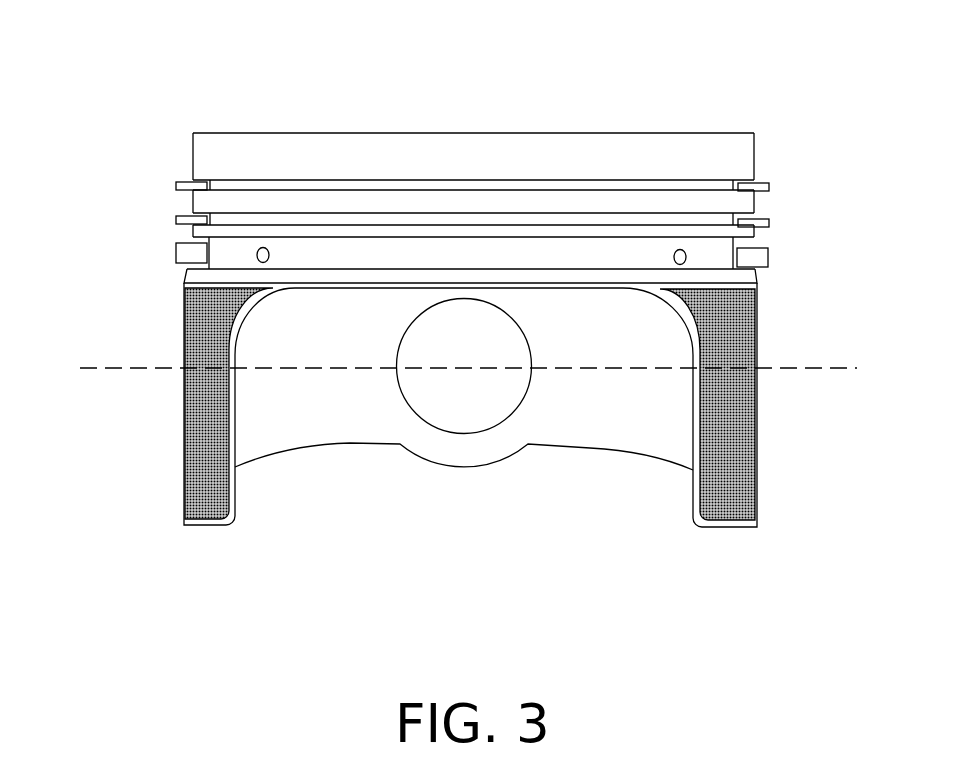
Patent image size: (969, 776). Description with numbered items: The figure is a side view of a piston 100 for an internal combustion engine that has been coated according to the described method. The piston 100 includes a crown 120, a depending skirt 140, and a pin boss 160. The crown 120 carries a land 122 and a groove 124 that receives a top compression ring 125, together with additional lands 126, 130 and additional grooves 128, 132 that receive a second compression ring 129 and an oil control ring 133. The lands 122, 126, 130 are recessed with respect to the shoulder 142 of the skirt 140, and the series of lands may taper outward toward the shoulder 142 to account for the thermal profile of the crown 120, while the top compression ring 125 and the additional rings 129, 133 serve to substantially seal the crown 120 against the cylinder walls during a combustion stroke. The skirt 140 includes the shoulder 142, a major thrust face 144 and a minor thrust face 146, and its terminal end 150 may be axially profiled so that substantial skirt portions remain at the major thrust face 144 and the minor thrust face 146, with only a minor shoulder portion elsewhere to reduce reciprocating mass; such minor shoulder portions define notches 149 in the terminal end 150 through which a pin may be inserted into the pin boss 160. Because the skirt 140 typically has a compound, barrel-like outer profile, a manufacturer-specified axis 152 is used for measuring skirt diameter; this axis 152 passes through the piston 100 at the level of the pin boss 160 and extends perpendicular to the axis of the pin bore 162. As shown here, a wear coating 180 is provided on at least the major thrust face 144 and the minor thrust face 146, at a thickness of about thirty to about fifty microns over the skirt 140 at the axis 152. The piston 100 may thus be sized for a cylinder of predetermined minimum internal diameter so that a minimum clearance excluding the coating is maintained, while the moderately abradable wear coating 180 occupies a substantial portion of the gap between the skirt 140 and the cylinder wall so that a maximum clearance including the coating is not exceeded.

The piston 100 is at (490, 101).
The crown 120 is at (253, 142).
The land 122 is at (748, 160).
The groove 124 is at (229, 186).
The top compression ring 125 is at (763, 188).
The additional land 126 is at (748, 203).
The additional groove 128 is at (232, 220).
The second compression ring 129 is at (768, 223).
The additional land 130 is at (752, 235).
The additional groove 132 is at (232, 257).
The oil control ring 133 is at (762, 258).
The skirt 140 is at (222, 377).
The shoulder 142 is at (752, 277).
The major thrust face 144 is at (183, 405).
The minor thrust face 146 is at (758, 398).
The notch 149 is at (653, 298).
The terminal end 150 is at (692, 495).
The manufacturer-specified axis 152 is at (442, 369).
The pin boss 160 is at (507, 422).
The pin bore 162 is at (430, 382).
The wear coating 180 is at (735, 443).